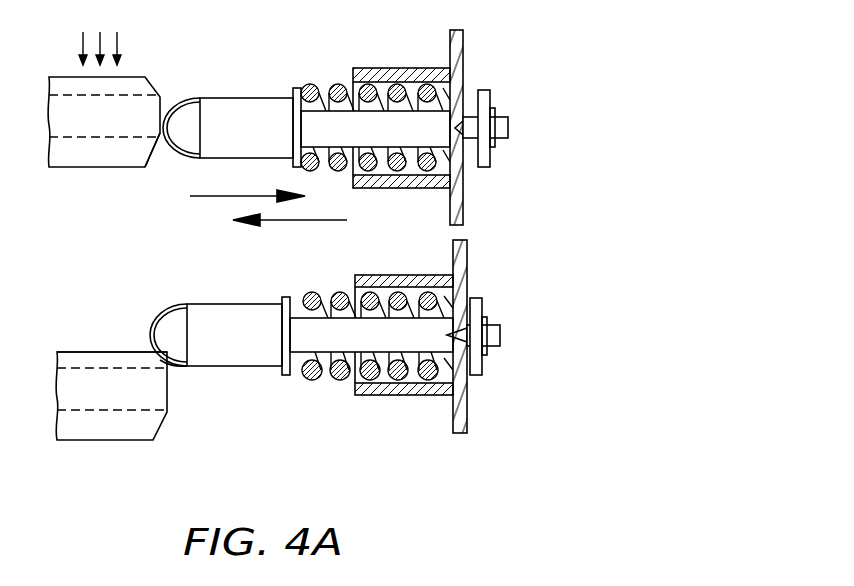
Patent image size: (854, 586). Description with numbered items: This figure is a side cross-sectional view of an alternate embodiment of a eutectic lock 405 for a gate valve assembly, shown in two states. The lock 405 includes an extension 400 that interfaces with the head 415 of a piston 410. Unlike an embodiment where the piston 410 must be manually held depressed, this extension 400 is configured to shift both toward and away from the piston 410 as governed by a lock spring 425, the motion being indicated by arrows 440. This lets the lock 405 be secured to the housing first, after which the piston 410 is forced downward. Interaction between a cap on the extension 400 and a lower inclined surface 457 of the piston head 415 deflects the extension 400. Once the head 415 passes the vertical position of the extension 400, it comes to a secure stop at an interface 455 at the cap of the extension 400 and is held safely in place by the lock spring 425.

The extension 400 is at (267, 141).
The eutectic lock 405 is at (508, 70).
The piston 410 is at (133, 129).
The head 415 is at (82, 352).
The lock spring 425 is at (311, 87).
The arrows 440 is at (291, 221).
The interface 455 is at (172, 372).
The lower inclined surface 457 is at (153, 160).